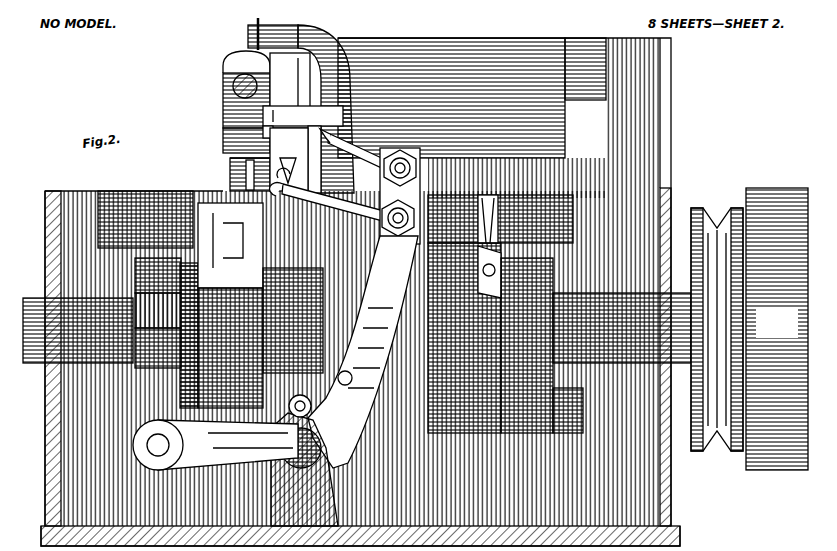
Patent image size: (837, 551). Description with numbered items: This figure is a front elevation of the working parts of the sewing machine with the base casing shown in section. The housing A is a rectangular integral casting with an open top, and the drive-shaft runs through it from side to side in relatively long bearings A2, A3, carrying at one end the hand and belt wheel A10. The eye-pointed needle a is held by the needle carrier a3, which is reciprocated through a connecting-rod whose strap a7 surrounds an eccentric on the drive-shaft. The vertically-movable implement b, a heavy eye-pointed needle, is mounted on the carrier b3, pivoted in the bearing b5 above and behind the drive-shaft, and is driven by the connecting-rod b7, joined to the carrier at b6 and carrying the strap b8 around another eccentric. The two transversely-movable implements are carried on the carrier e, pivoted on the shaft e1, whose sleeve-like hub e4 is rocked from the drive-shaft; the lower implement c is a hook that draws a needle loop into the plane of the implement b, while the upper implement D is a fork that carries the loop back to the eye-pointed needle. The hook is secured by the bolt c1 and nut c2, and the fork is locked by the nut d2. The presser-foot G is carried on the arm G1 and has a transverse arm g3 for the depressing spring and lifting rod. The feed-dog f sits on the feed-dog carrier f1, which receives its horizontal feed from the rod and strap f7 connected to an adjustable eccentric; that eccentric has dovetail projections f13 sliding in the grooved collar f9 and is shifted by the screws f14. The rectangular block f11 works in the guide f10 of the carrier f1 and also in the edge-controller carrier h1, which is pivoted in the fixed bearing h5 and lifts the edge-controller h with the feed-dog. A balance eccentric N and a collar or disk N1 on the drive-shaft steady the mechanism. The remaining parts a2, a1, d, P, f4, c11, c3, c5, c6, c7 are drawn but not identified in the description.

The housing A is at (360, 292).
The needle carrier a3 is at (452, 108).
The block a2 is at (275, 18).
The pin a1 is at (249, 18).
The presser-foot arm G1 is at (224, 51).
The presser-foot G is at (216, 122).
The eye-pointed needle a is at (262, 54).
The transversely-extending arm g3 is at (303, 116).
The upper transversely-movable implement D is at (310, 123).
The feed-dog f is at (222, 170).
The edge-controller h is at (222, 152).
The bearing b5 is at (332, 84).
The vertically-movable implement b is at (283, 170).
The pivotal connection b6 is at (355, 137).
The carrier b3 is at (325, 202).
The bolt d is at (396, 156).
The nut d2 is at (414, 135).
The connecting-rod b7 is at (398, 210).
The rod and strap f7 is at (500, 223).
The collar f9 is at (464, 338).
The dovetail projections f13 is at (461, 276).
The screws f14 is at (463, 292).
The carrier e is at (496, 272).
The drive-shaft bearing A2 is at (622, 363).
The pulley P is at (717, 329).
The hand and belt wheel A10 is at (777, 317).
The fixed bearing h5 is at (110, 190).
The drive-shaft bearing A3 is at (78, 330).
The hub e4 is at (148, 313).
The collar or disk N1 is at (189, 335).
The feed-dog carrier f1 is at (230, 245).
The edge-controller carrier h1 is at (211, 272).
The rectangular block f11 is at (230, 348).
The guide f10 is at (243, 360).
The part f4 is at (215, 362).
The strap a7 is at (293, 319).
The balance eccentric N is at (334, 326).
The lower transversely-movable implement c is at (363, 352).
The bolt c1 is at (393, 260).
The nut c2 is at (398, 278).
The strap b8 is at (418, 314).
The pivot c11 is at (355, 376).
The bracket c3 is at (249, 459).
The lever c5 is at (215, 445).
The part c6 is at (146, 418).
The part c7 is at (134, 438).
The shaft e1 is at (259, 456).